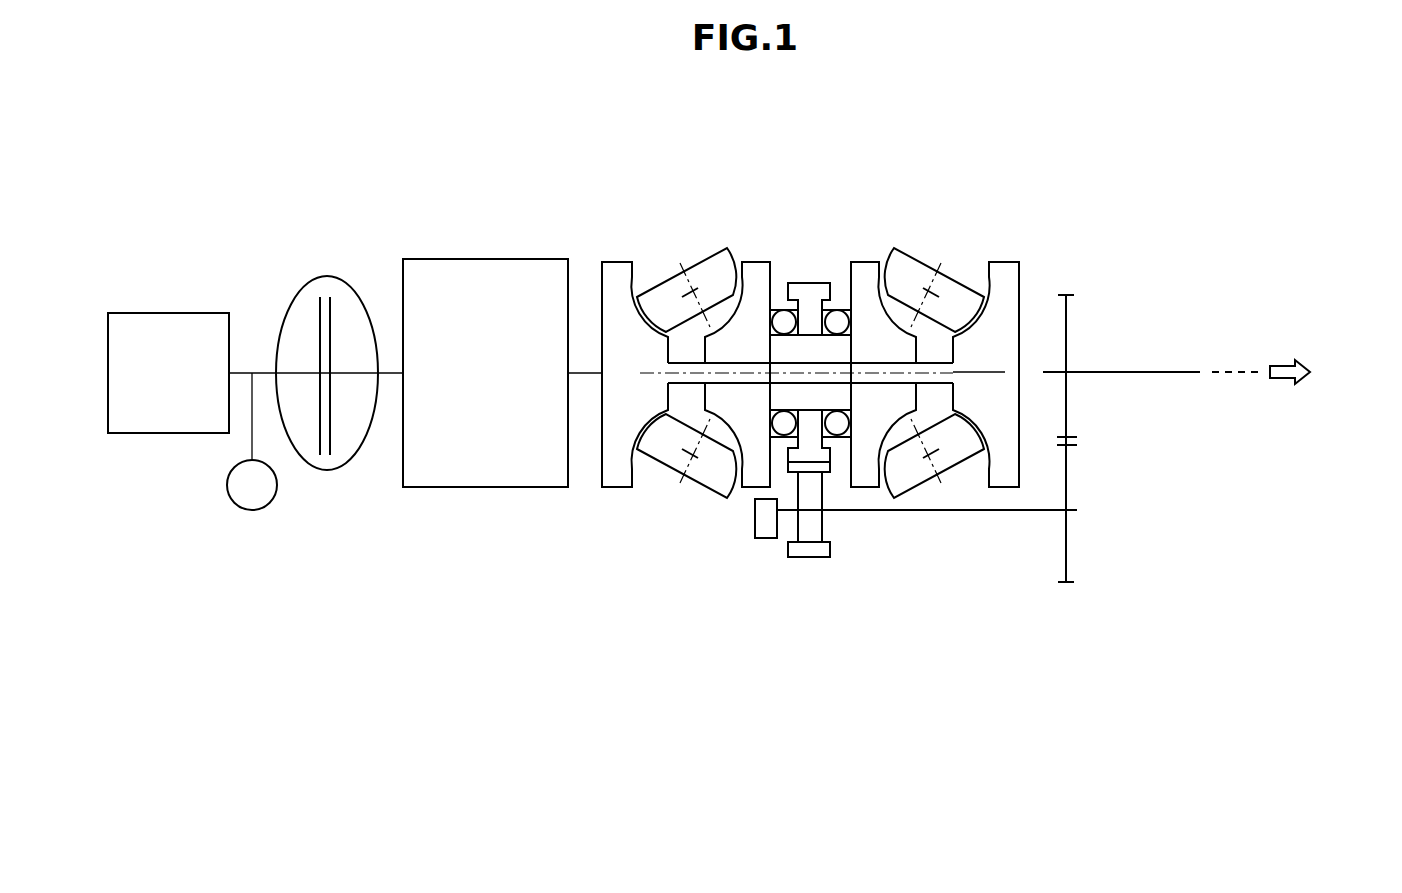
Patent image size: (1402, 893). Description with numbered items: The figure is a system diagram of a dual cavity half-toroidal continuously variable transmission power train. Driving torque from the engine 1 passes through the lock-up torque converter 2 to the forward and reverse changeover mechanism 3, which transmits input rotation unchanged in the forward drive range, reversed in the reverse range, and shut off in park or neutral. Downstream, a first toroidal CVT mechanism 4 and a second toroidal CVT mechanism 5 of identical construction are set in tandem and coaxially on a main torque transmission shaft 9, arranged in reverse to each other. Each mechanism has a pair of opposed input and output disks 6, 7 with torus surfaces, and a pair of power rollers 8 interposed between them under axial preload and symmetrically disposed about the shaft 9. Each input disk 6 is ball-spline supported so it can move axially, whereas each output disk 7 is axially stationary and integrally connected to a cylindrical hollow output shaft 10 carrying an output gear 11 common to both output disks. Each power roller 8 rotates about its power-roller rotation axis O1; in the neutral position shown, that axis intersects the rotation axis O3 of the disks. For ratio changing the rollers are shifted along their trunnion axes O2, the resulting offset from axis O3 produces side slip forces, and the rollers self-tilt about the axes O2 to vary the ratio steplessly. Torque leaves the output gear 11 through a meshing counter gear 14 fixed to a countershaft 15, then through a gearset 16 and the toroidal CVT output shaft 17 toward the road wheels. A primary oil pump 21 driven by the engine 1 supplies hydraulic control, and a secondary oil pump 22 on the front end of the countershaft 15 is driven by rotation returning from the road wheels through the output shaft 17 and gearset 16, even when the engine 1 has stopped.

The engine 1 is at (192, 313).
The lock-up torque converter 2 is at (327, 277).
The forward and reverse changeover mechanism 3 is at (498, 488).
The first toroidal CVT mechanism 4 is at (682, 232).
The second toroidal CVT mechanism 5 is at (923, 240).
The input disk 6 is at (613, 262).
The output disk 7 is at (760, 262).
The power roller 8 is at (650, 290).
The main torque transmission shaft 9 is at (831, 443).
The cylindrical hollow output shaft 10 is at (838, 362).
The output gear 11 is at (800, 283).
The counter gear 14 is at (820, 557).
The countershaft 15 is at (1020, 512).
The gearset 16 is at (1066, 410).
The toroidal CVT output shaft 17 is at (1178, 373).
The primary oil pump 21 is at (234, 503).
The secondary oil pump 22 is at (767, 538).
The power-roller rotation axis O1 is at (960, 546).
The trunnion axis O2 is at (920, 556).
The rotation axis of the input and output disks O3 is at (1002, 350).